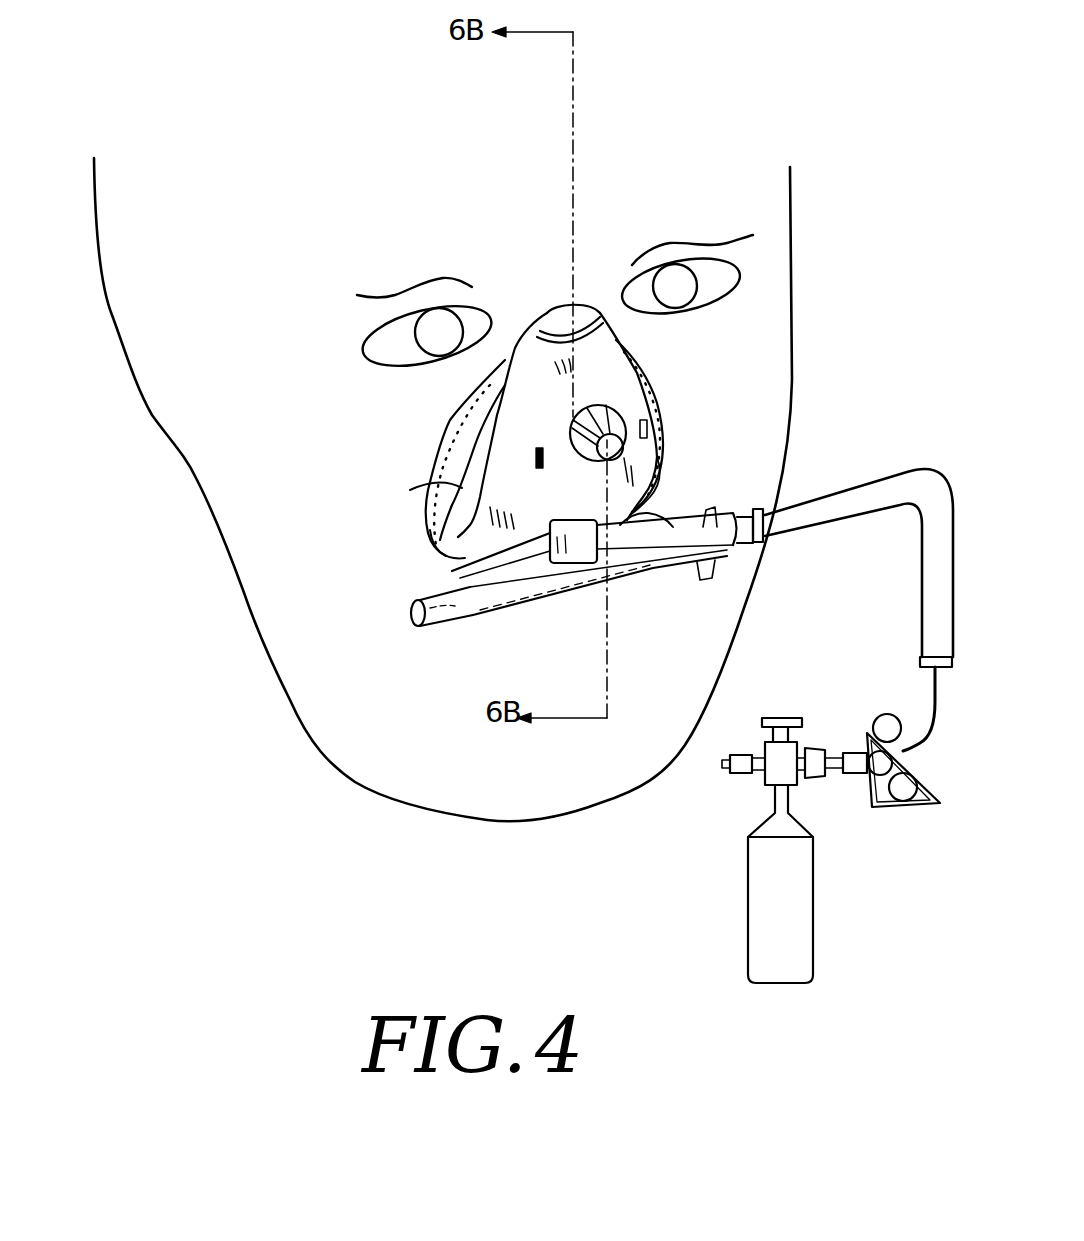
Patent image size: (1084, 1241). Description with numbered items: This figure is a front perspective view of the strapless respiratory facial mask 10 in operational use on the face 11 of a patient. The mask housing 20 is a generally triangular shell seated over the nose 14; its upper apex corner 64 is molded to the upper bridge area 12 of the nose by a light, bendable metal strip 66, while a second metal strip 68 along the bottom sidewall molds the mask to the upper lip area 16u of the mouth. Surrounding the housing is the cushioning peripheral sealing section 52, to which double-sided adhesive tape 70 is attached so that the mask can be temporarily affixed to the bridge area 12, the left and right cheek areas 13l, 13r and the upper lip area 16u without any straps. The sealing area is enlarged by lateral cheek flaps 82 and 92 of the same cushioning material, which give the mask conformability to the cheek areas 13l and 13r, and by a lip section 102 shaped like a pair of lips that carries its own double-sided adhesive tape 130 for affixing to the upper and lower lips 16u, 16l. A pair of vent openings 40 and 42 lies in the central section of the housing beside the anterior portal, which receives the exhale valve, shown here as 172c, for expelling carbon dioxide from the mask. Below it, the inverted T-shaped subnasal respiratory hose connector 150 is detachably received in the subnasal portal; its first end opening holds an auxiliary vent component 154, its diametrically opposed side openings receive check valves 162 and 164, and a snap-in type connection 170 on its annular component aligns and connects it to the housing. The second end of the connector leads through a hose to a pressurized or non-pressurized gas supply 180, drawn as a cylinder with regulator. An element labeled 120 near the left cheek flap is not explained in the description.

The strapless respiratory facial mask 10 is at (778, 375).
The face 11 is at (807, 454).
The upper bridge area of the nose 12 is at (550, 297).
The right cheek area 13r is at (753, 403).
The left cheek area 13l is at (435, 440).
The nose 14 is at (470, 543).
The upper lip area 16u is at (488, 571).
The lower lip 16l is at (560, 605).
The mask housing 20 is at (547, 313).
The vent opening 40 is at (536, 452).
The vent opening 42 is at (647, 428).
The peripheral sealing section 52 is at (415, 489).
The upper apex corner 64 is at (583, 307).
The metal strip 66 is at (587, 310).
The second metal strip 68 is at (650, 497).
The double-sided adhesive tape 70 is at (525, 327).
The lateral cheek section 82 is at (437, 420).
The lateral cheek section 92 is at (652, 355).
The lip section 102 is at (536, 630).
The cushion pad 120 is at (468, 390).
The double-sided adhesive tape 130 is at (500, 623).
The subnasal respiratory hose connector 150 is at (459, 582).
The auxiliary vent component 154 is at (442, 621).
The check valve 162 is at (722, 510).
The check valve 164 is at (700, 580).
The snap-in type connection 170 is at (657, 460).
The exhalation vent 172c is at (575, 455).
The gas supply 180 is at (768, 917).